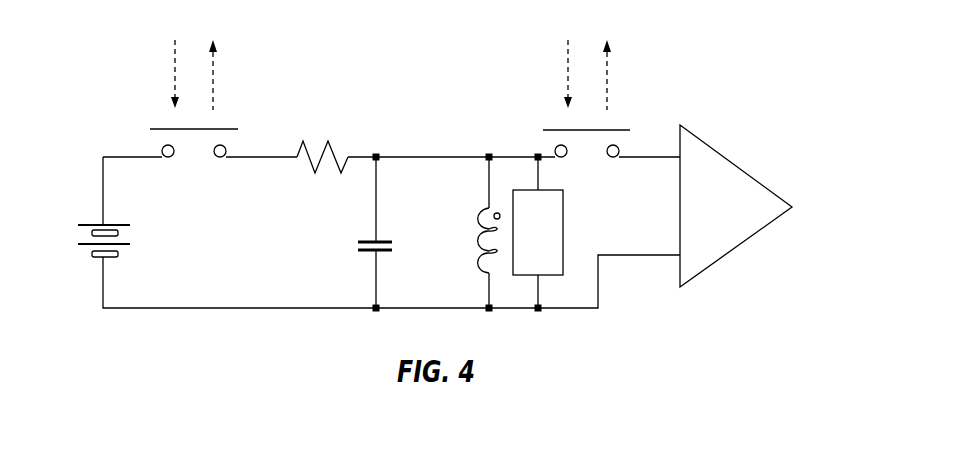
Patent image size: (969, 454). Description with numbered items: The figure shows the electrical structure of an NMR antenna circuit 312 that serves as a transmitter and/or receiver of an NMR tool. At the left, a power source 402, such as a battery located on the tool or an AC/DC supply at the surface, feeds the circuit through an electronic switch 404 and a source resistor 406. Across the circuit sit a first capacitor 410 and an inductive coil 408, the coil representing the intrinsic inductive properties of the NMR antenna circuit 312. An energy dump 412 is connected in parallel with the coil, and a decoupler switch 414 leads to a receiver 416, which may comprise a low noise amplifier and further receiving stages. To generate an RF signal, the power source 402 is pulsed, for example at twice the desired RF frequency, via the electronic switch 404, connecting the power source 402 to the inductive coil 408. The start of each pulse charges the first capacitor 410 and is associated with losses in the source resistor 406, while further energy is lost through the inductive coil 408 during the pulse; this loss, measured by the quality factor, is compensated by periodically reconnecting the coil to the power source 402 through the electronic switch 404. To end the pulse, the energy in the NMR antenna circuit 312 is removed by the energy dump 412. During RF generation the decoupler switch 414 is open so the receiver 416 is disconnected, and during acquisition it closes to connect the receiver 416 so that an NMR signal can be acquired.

The NMR antenna circuit 312 is at (704, 54).
The power source 402 is at (102, 262).
The electronic switch 404 is at (160, 140).
The source resistor 406 is at (335, 150).
The inductive coil 408 is at (485, 268).
The first capacitor 410 is at (365, 255).
The energy dump 412 is at (563, 233).
The decoupler switch 414 is at (587, 158).
The receiver 416 is at (735, 247).